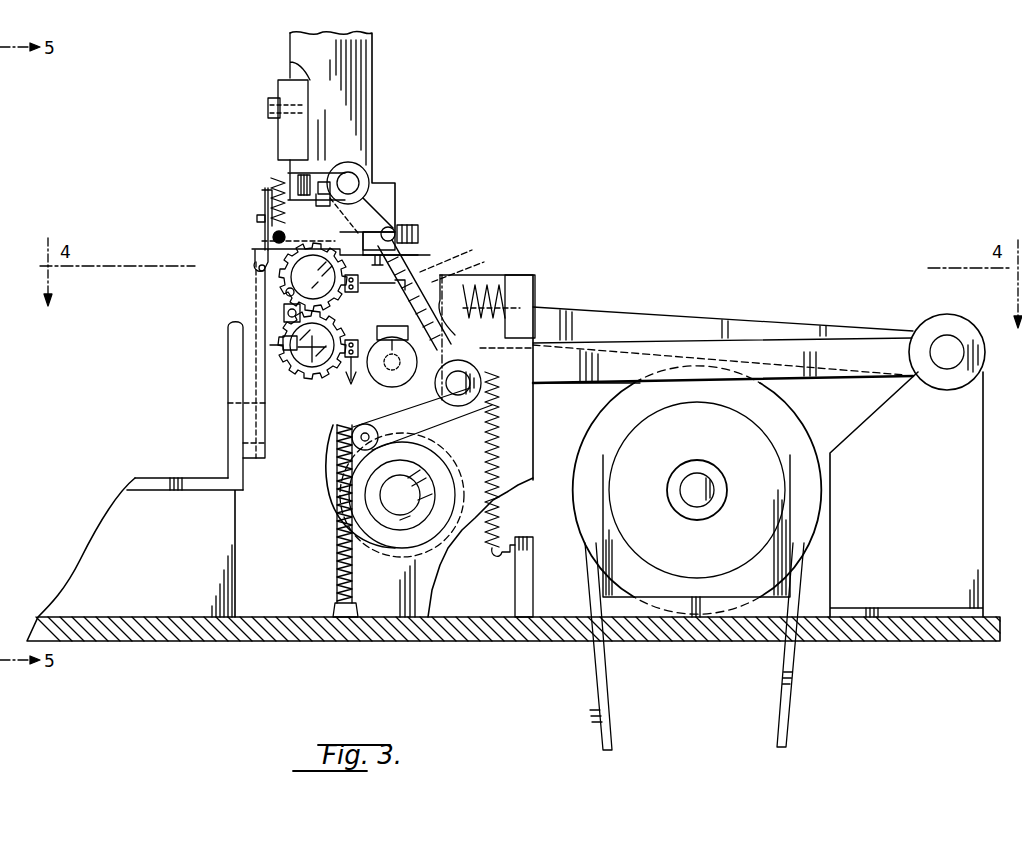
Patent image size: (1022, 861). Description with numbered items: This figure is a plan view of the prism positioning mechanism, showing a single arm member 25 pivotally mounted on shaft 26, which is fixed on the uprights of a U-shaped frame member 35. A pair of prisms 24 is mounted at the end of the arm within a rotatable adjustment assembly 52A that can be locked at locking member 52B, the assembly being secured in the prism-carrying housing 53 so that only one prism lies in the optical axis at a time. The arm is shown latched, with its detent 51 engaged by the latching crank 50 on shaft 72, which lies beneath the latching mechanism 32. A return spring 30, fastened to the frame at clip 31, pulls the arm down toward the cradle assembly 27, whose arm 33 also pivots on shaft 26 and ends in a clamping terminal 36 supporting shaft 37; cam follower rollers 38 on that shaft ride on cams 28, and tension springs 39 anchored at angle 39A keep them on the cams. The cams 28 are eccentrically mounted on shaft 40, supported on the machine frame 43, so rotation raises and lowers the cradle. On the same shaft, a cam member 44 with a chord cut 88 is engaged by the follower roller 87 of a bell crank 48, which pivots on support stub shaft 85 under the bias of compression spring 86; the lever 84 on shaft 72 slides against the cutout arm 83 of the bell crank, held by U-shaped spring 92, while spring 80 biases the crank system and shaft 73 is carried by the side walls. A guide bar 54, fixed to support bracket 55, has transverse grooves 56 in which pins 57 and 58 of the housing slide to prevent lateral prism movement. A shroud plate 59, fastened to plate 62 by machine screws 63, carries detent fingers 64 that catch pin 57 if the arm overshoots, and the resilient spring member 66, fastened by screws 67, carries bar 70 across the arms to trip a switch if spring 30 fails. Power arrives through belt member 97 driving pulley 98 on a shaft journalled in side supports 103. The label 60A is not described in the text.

The prisms 24 is at (318, 340).
The arm member 25 is at (627, 323).
The shaft 26 is at (956, 357).
The cradle assembly 27 is at (571, 386).
The cam 28 is at (333, 484).
The return spring 30 is at (336, 536).
The clip 31 is at (334, 608).
The latching mechanism 32 is at (297, 133).
The arm 33 is at (688, 352).
The U-shaped frame member 35 is at (944, 488).
The clamping terminal 36 is at (446, 275).
The shaft 37 is at (413, 398).
The cam follower rollers 38 is at (451, 349).
The tension springs 39 is at (496, 515).
The angle 39A is at (502, 550).
The shaft 40 is at (402, 507).
The machine frame 43 is at (648, 627).
The cam member 44 is at (368, 536).
The bell crank 48 is at (478, 351).
The latching crank 50 is at (394, 229).
The detent 51 is at (340, 212).
The rotatable adjustment assembly 52A is at (286, 294).
The locking member 52B is at (278, 313).
The prism-carrying housing 53 is at (296, 392).
The guide bar 54 is at (240, 384).
The support bracket 55 is at (235, 415).
The transverse grooves 56 is at (258, 439).
The pin 57 is at (253, 259).
The pin 58 is at (280, 347).
The shroud plate 59 is at (258, 207).
The guide 60A is at (280, 338).
The plate 62 is at (277, 205).
The machine screws 63 is at (257, 219).
The detent fingers 64 is at (258, 268).
The resilient spring member 66 is at (447, 260).
The screws 67 is at (318, 277).
The bar 70 is at (382, 286).
The shaft 72 is at (356, 182).
The shaft 73 is at (272, 238).
The spring 80 is at (272, 212).
The cutout arm 83 is at (416, 230).
The lever 84 is at (360, 234).
The support stub shaft 85 is at (492, 400).
The compression spring 86 is at (505, 300).
The follower roller 87 is at (348, 430).
The chord cut 88 is at (348, 450).
The U-shaped spring 92 is at (398, 234).
The belt member 97 is at (790, 700).
The pulley 98 is at (783, 421).
The side supports 103 is at (733, 575).